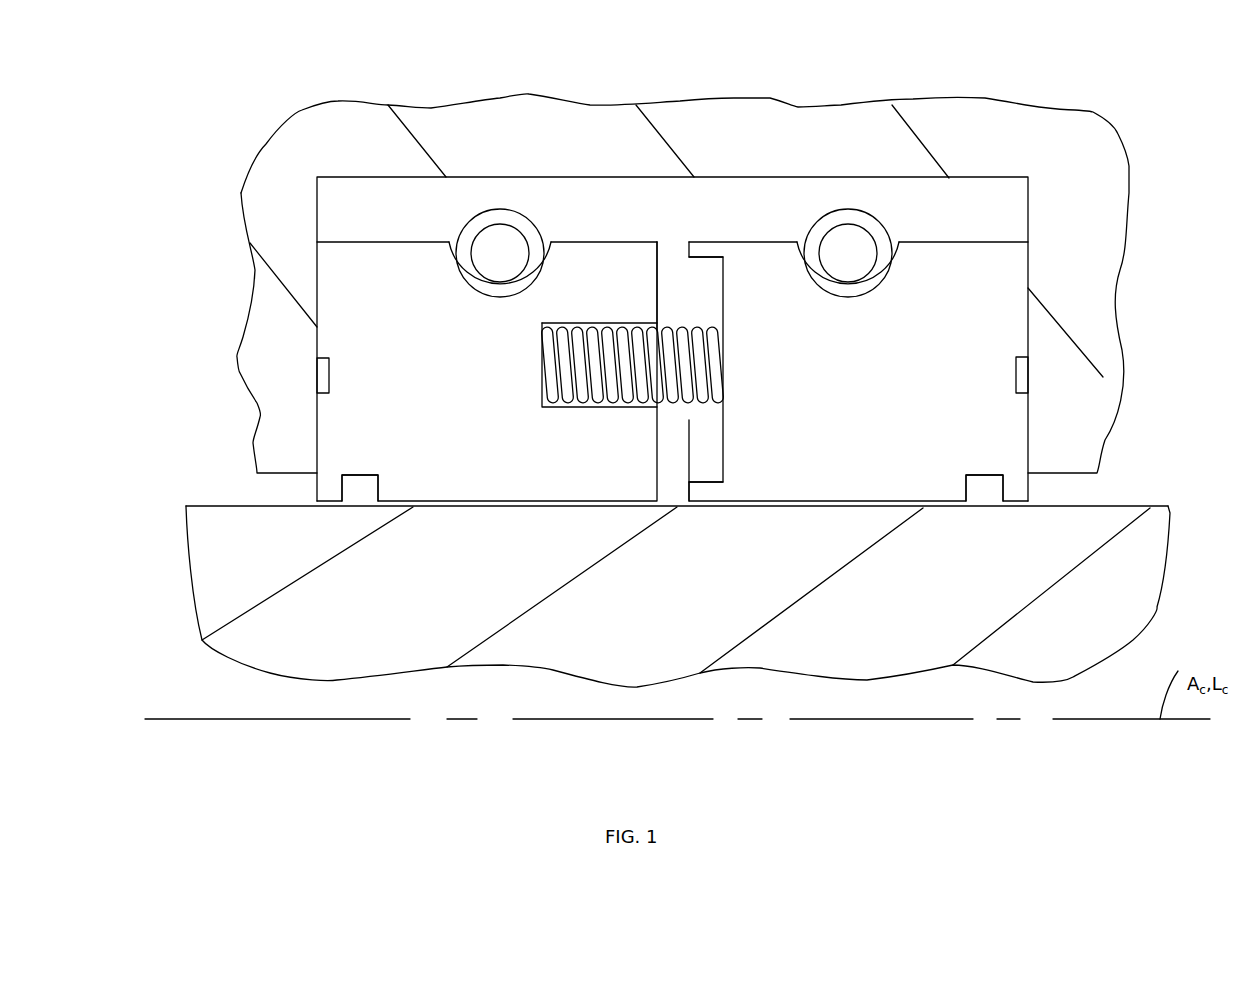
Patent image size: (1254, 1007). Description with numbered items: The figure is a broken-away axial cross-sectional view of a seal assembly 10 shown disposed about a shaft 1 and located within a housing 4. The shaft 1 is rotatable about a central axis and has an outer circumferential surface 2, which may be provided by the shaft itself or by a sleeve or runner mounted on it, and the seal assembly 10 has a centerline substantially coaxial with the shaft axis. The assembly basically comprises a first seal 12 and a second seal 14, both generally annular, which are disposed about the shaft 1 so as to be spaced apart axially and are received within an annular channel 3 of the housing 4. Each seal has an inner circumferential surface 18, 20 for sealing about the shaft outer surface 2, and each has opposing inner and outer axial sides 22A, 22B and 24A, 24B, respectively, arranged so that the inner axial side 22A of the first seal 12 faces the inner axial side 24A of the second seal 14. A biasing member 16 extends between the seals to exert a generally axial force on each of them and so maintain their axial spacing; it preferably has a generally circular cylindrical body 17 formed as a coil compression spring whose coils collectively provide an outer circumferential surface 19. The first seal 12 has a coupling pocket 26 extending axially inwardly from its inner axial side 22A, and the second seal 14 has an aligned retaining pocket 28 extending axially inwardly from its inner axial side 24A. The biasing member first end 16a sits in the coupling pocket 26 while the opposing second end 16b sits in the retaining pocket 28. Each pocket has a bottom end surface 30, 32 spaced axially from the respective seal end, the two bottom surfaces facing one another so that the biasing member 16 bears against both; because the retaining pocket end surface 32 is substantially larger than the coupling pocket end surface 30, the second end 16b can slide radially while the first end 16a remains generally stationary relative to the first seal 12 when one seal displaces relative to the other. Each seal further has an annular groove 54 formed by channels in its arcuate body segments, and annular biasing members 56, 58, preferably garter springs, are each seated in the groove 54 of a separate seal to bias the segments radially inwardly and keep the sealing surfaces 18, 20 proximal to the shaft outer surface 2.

The shaft 1 is at (178, 573).
The outer circumferential surface 2 is at (1143, 507).
The annular channel 3 is at (1002, 196).
The housing 4 is at (963, 112).
The seal assembly 10 is at (594, 140).
The first seal 12 is at (463, 391).
The second seal 14 is at (912, 399).
The biasing member 16 is at (680, 420).
The biasing member first end 16a is at (487, 371).
The biasing member second end 16b is at (858, 352).
The circular cylindrical body 17 is at (600, 405).
The inner circumferential surface 18 is at (487, 507).
The outer circumferential surface 19 is at (680, 325).
The inner circumferential surface 20 is at (848, 507).
The inner axial side 22A is at (658, 254).
The outer axial side 22B is at (316, 398).
The inner axial side 24A is at (688, 500).
The outer axial side 24B is at (1028, 428).
The coupling pocket 26 is at (582, 320).
The retaining pocket 28 is at (704, 265).
The bottom end surface 30 is at (540, 373).
The bottom end surface 32 is at (714, 442).
The annular groove 54 is at (478, 295).
The annular biasing member 56 is at (505, 210).
The annular biasing member 58 is at (848, 210).